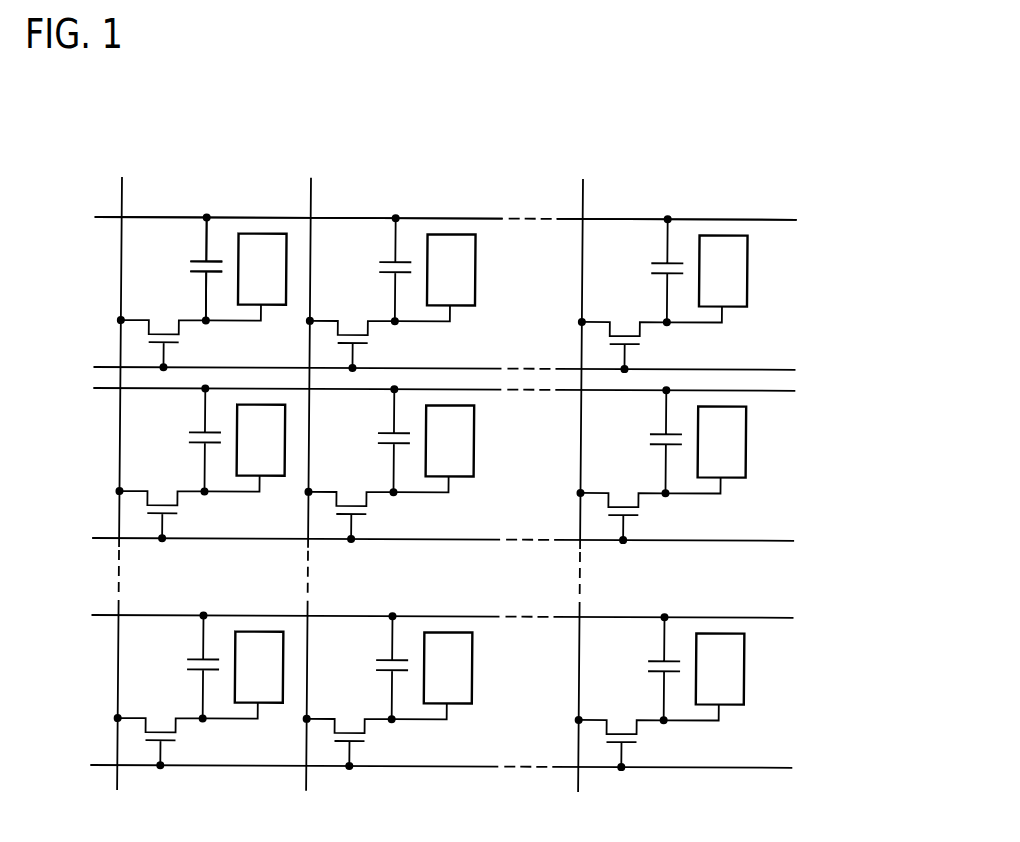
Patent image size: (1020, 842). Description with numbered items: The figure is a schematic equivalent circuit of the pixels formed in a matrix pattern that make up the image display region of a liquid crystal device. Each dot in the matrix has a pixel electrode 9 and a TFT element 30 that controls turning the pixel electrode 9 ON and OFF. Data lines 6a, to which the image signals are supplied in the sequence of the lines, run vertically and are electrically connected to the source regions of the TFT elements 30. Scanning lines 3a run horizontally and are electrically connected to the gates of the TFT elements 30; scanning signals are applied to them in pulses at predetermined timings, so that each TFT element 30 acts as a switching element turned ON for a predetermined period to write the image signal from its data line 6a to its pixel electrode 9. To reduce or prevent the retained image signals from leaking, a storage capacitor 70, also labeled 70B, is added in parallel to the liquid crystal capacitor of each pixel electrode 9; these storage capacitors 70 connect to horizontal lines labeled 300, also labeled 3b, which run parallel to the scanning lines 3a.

The data line 6a is at (122, 192).
The capacitor line 300 is at (750, 219).
The capacitor line 3b is at (479, 249).
The scanning line 3a is at (773, 369).
The storage capacitor 70 is at (188, 270).
The storage capacitor 70B is at (135, 268).
The TFT element 30 is at (181, 333).
The pixel electrode 9 is at (462, 305).